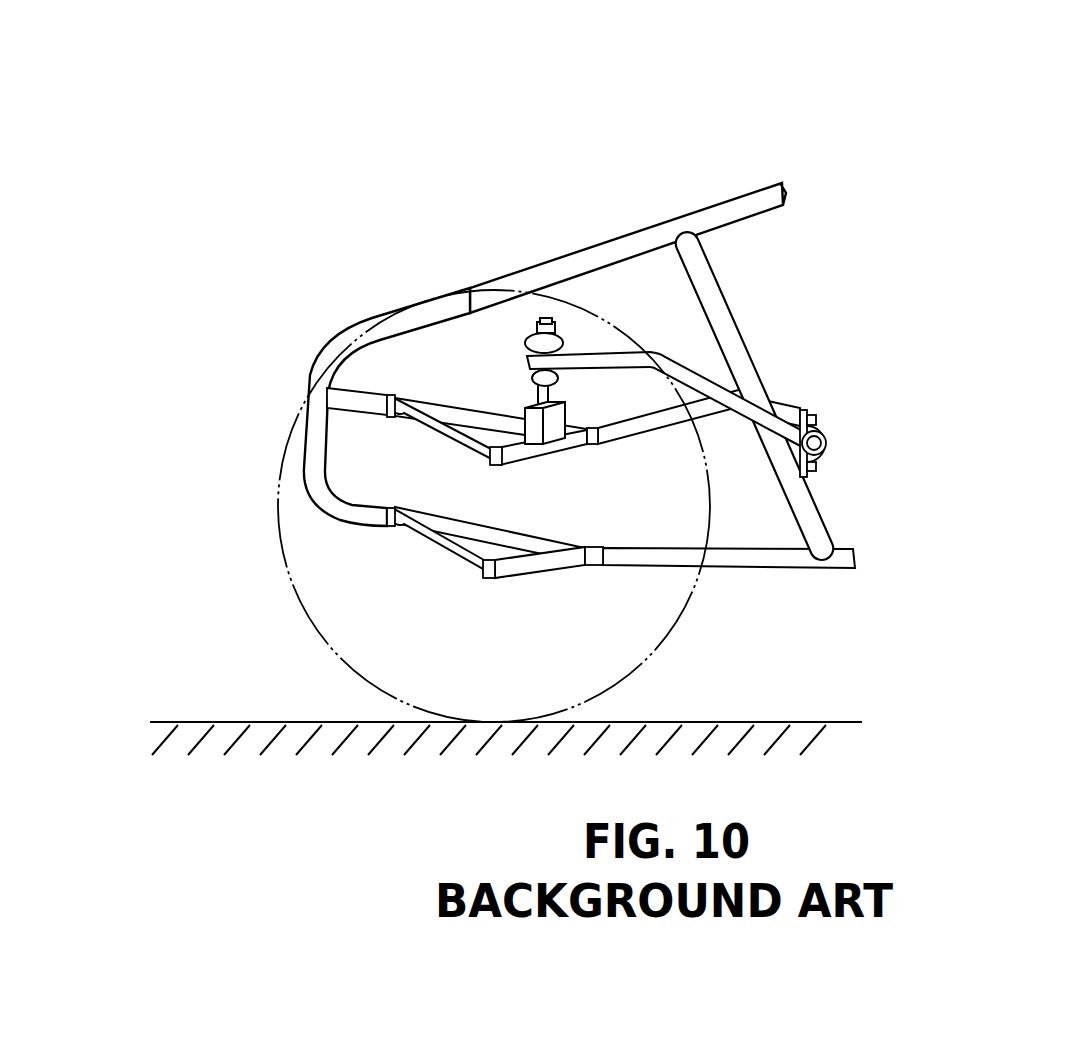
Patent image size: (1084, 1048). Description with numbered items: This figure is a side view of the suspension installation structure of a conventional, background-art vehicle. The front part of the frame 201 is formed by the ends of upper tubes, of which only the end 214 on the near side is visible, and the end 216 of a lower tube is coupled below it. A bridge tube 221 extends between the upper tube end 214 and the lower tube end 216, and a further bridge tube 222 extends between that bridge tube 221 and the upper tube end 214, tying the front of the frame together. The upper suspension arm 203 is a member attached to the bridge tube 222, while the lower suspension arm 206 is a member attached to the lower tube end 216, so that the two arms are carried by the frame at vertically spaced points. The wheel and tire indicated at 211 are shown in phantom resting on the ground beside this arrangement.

The frame 201 is at (620, 232).
The end of upper tube 214 is at (542, 262).
The bridge tube 221 is at (723, 293).
The bridge tube 222 is at (650, 437).
The upper suspension arm 203 is at (525, 464).
The lower suspension arm 206 is at (520, 575).
The end of lower tube 216 is at (748, 568).
The wheel 211 is at (272, 490).